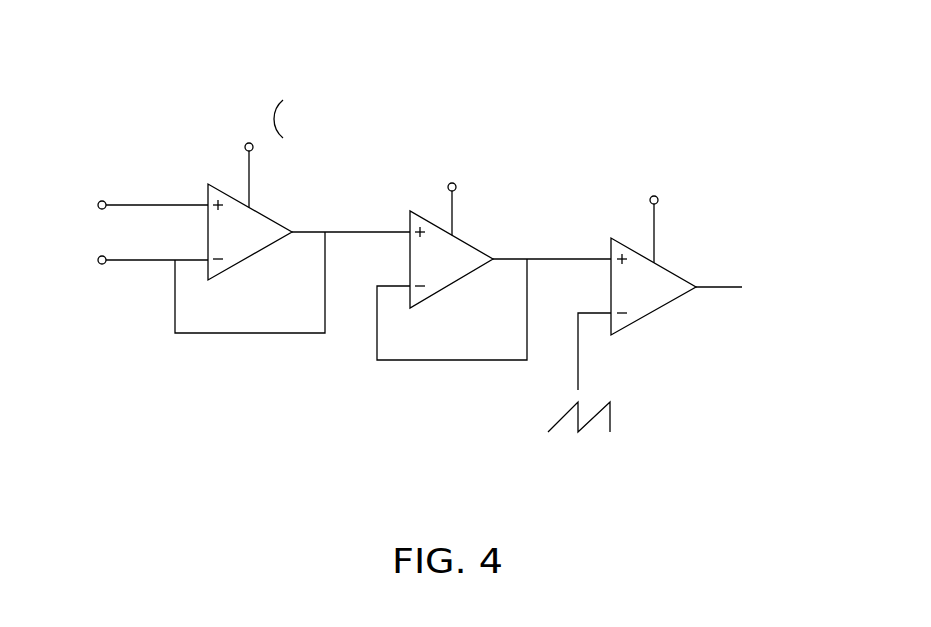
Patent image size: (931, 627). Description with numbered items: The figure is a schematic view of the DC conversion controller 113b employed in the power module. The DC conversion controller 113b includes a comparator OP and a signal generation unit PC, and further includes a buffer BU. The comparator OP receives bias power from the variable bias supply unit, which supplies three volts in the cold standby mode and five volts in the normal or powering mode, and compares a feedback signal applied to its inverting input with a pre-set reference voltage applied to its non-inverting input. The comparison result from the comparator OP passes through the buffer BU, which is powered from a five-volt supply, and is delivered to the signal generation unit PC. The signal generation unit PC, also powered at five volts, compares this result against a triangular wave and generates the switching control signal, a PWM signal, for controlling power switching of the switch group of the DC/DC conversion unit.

The DC conversion controller 113b is at (575, 59).
The comparator OP is at (265, 207).
The buffer BU is at (468, 239).
The signal generation unit PC is at (668, 268).